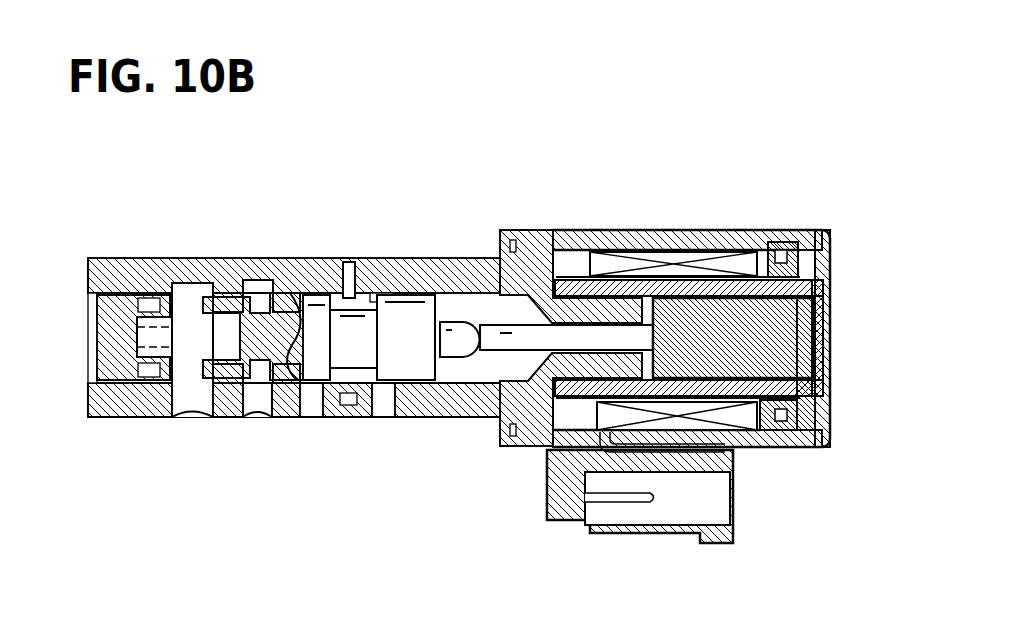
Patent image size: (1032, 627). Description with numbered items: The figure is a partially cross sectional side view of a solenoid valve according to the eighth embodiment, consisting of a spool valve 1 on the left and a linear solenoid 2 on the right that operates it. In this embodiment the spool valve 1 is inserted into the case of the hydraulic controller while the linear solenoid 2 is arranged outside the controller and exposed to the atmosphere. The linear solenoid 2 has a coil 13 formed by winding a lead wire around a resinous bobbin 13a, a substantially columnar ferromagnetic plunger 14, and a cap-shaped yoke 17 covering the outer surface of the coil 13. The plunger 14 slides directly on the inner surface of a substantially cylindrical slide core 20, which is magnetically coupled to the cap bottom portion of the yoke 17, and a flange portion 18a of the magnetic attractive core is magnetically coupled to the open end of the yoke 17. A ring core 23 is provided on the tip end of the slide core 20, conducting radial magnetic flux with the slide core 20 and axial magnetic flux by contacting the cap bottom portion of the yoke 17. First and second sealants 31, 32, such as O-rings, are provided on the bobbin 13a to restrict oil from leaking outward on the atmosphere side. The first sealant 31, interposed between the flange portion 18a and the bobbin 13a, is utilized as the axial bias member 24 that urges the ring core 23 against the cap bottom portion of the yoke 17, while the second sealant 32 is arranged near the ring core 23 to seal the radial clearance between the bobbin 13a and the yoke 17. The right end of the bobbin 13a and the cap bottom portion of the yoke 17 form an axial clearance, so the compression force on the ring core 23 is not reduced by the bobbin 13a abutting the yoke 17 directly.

The spool valve 1 is at (88, 425).
The linear solenoid 2 is at (832, 450).
The coil 13 is at (737, 450).
The bobbin 13a is at (777, 447).
The plunger 14 is at (793, 335).
The yoke 17 is at (823, 417).
The flange portion 18a is at (537, 229).
The slide core 20 is at (828, 286).
The ring core 23 is at (830, 247).
The axial bias member 24 is at (678, 285).
The first sealant 31 is at (657, 227).
The second sealant 32 is at (780, 228).